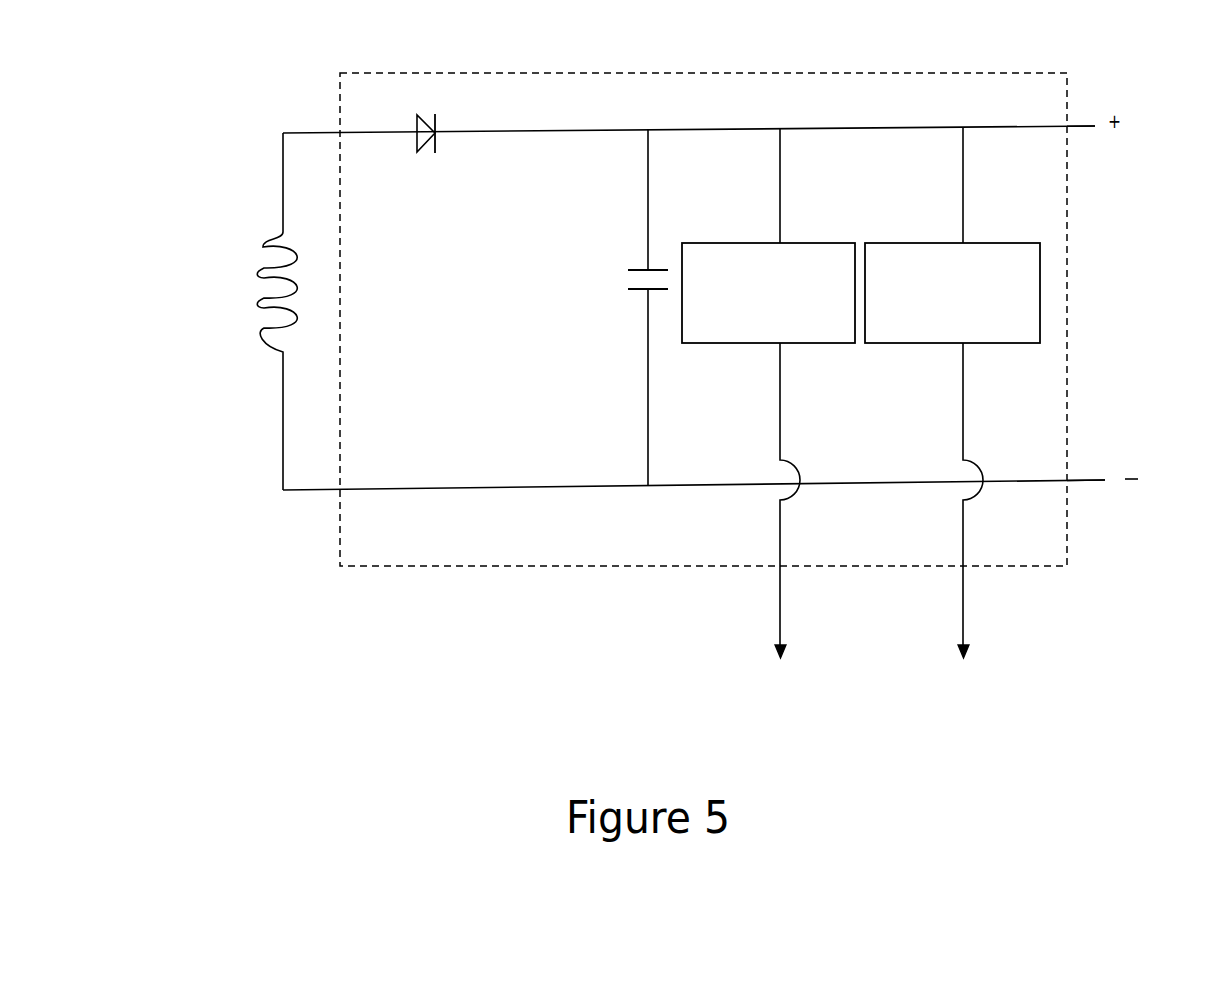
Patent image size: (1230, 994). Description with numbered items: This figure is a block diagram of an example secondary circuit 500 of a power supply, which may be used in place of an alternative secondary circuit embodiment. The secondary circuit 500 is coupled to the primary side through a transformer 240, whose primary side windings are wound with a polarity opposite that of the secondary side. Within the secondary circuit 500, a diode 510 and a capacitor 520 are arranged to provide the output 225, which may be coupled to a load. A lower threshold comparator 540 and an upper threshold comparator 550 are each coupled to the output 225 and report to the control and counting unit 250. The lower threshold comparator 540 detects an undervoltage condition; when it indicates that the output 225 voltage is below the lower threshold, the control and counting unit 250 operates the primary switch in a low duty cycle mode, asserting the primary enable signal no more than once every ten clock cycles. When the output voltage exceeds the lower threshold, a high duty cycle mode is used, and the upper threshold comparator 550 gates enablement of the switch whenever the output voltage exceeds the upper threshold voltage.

The secondary circuit 500 is at (703, 303).
The transformer 240 is at (213, 311).
The diode 510 is at (424, 151).
The capacitor 520 is at (624, 308).
The lower threshold comparator 540 is at (768, 236).
The upper threshold comparator 550 is at (952, 235).
The control and counting unit 250 is at (901, 540).
The output 225 is at (1140, 303).